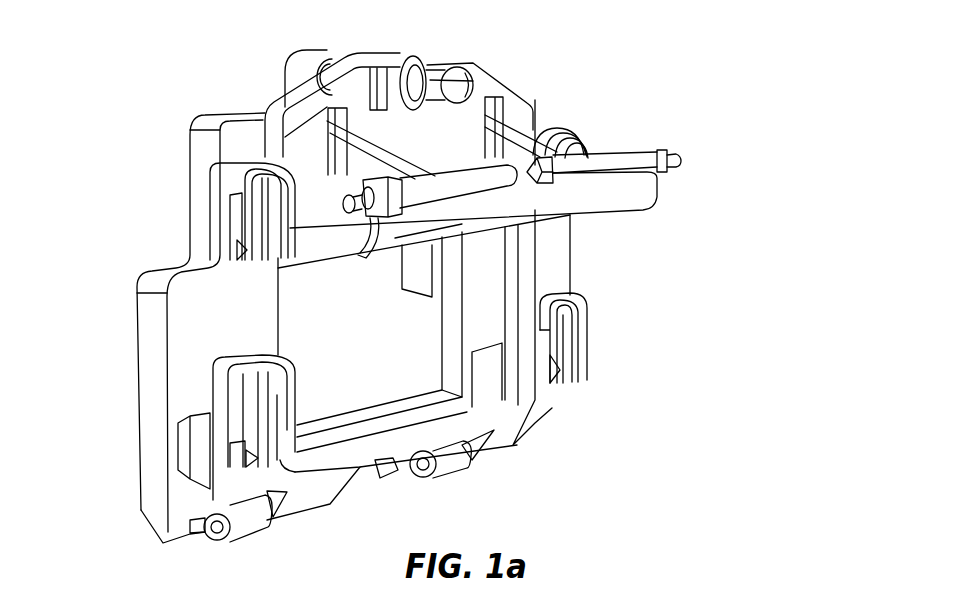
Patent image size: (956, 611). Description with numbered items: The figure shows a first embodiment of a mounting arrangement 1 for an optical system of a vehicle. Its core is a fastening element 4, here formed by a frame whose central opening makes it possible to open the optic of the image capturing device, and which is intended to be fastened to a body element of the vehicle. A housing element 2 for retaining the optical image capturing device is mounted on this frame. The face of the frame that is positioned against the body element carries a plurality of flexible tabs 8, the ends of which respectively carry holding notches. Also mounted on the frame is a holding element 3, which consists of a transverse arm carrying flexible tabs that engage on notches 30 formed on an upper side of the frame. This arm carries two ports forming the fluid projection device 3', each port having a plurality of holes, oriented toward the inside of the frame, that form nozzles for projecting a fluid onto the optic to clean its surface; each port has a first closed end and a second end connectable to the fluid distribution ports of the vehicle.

The mounting arrangement 1 is at (142, 82).
The housing element 2 is at (150, 337).
The holding element 3 is at (473, 172).
The fluid projection device 3' is at (627, 114).
The fastening element 4 is at (522, 98).
The flexible tabs 8 is at (252, 202).
The notches 30 is at (332, 115).